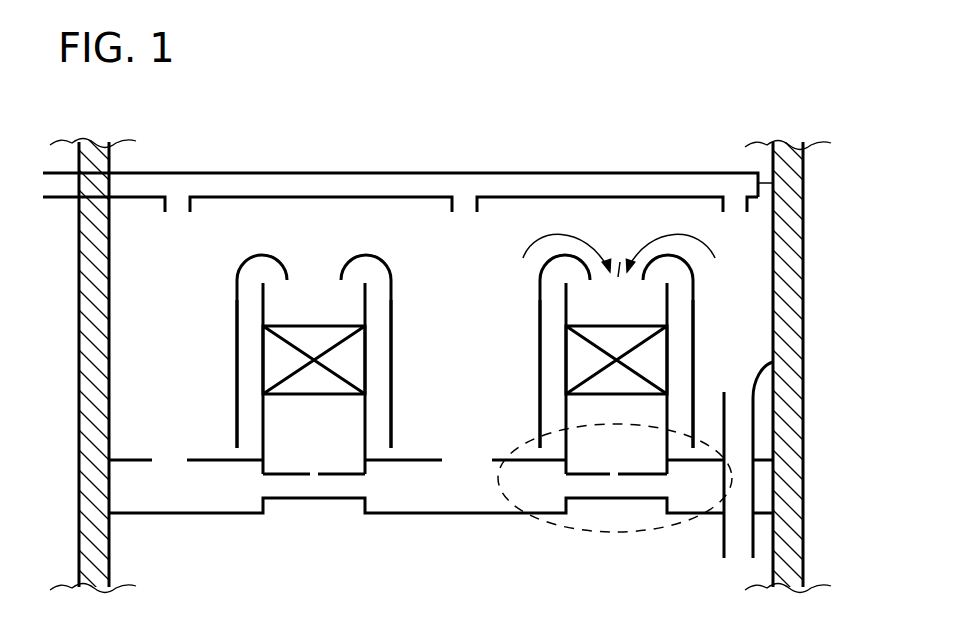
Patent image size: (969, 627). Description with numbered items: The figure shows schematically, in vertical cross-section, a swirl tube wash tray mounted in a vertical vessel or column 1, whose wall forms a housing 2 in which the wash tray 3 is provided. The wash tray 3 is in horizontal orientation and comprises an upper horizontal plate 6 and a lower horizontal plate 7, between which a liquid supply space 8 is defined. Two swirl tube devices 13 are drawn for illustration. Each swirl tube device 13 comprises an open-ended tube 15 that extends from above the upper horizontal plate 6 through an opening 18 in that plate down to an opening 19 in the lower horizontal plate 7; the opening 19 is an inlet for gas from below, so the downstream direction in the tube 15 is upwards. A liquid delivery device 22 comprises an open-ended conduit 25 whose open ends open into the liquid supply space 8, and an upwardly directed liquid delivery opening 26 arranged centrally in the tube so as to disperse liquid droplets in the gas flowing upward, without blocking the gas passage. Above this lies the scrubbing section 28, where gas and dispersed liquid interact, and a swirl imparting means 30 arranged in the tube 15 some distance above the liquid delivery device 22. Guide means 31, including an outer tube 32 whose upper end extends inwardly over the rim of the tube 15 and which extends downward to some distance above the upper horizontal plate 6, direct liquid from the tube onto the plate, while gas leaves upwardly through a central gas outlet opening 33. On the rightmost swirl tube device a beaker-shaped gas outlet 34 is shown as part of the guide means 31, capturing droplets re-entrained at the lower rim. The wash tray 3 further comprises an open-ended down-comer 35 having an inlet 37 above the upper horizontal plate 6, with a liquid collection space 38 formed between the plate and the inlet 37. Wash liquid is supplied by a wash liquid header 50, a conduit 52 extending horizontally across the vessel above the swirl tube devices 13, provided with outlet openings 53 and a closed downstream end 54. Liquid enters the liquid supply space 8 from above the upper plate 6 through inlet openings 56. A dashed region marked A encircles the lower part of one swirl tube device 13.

The vertical vessel 1 is at (55, 297).
The housing 2 is at (78, 462).
The wash tray 3 is at (157, 525).
The upper horizontal plate 6 is at (420, 460).
The lower horizontal plate 7 is at (447, 516).
The liquid supply space 8 is at (478, 492).
The swirl tube device 13 is at (537, 284).
The open-ended tube 15 is at (367, 412).
The opening 18 is at (352, 478).
The opening 19 is at (360, 514).
The liquid delivery device 22 is at (296, 507).
The open-ended conduit 25 is at (273, 478).
The liquid delivery opening 26 is at (315, 476).
The scrubbing section 28 is at (287, 447).
The swirl imparting means 30 is at (280, 362).
The guide means 31 is at (393, 322).
The outer tube 32 is at (237, 302).
The central gas outlet opening 33 is at (312, 272).
The beaker-shaped gas outlet 34 is at (570, 233).
The open-ended down-comer 35 is at (753, 428).
The inlet 37 is at (770, 358).
The liquid collection space 38 is at (498, 433).
The wash liquid header 50 is at (256, 170).
The conduit 52 is at (372, 172).
The outlet openings 53 is at (177, 210).
The downstream end 54 is at (758, 183).
The inlet openings 56 is at (163, 460).
The detail region A is at (570, 527).